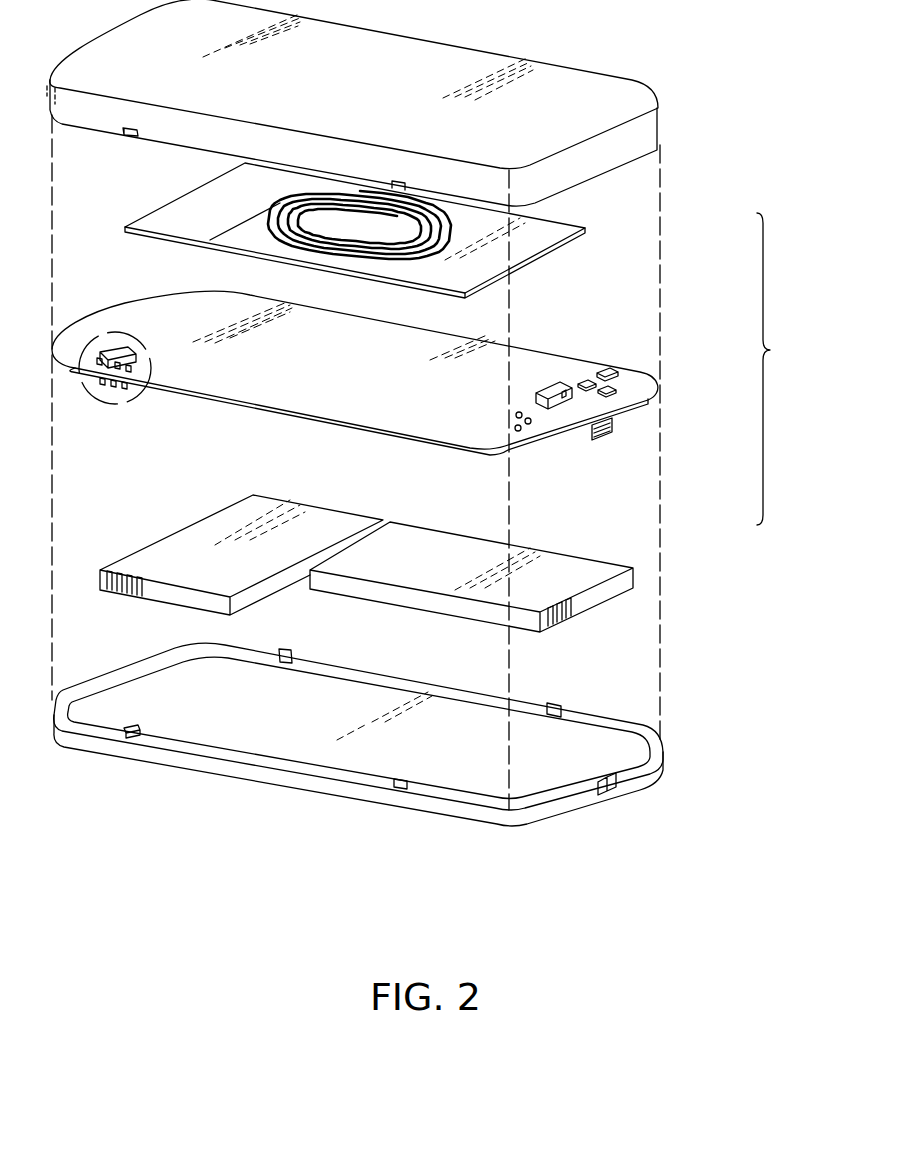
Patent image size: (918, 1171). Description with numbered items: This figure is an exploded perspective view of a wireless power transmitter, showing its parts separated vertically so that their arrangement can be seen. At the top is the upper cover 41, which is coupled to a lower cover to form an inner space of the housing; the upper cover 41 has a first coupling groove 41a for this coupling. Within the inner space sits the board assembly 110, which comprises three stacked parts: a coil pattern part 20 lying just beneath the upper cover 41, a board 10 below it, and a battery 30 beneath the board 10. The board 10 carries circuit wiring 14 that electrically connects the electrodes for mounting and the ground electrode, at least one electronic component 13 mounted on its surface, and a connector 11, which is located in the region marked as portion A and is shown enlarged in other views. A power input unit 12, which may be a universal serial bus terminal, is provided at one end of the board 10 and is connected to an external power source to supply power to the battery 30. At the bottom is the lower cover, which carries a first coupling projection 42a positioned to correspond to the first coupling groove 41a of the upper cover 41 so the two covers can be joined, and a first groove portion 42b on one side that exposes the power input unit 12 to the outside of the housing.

The upper cover 41 is at (378, 103).
The first coupling groove 41a is at (128, 138).
The coil pattern part 20 is at (595, 222).
The board assembly 110 is at (433, 397).
The board 10 is at (398, 381).
The connector 11 is at (603, 393).
The power input unit 12 is at (612, 432).
The electronic component 13 is at (604, 372).
The circuit wiring 14 is at (557, 358).
The portion A is at (108, 405).
The battery 30 is at (608, 572).
The first coupling projection 42a is at (128, 738).
The first groove portion 42b is at (613, 793).